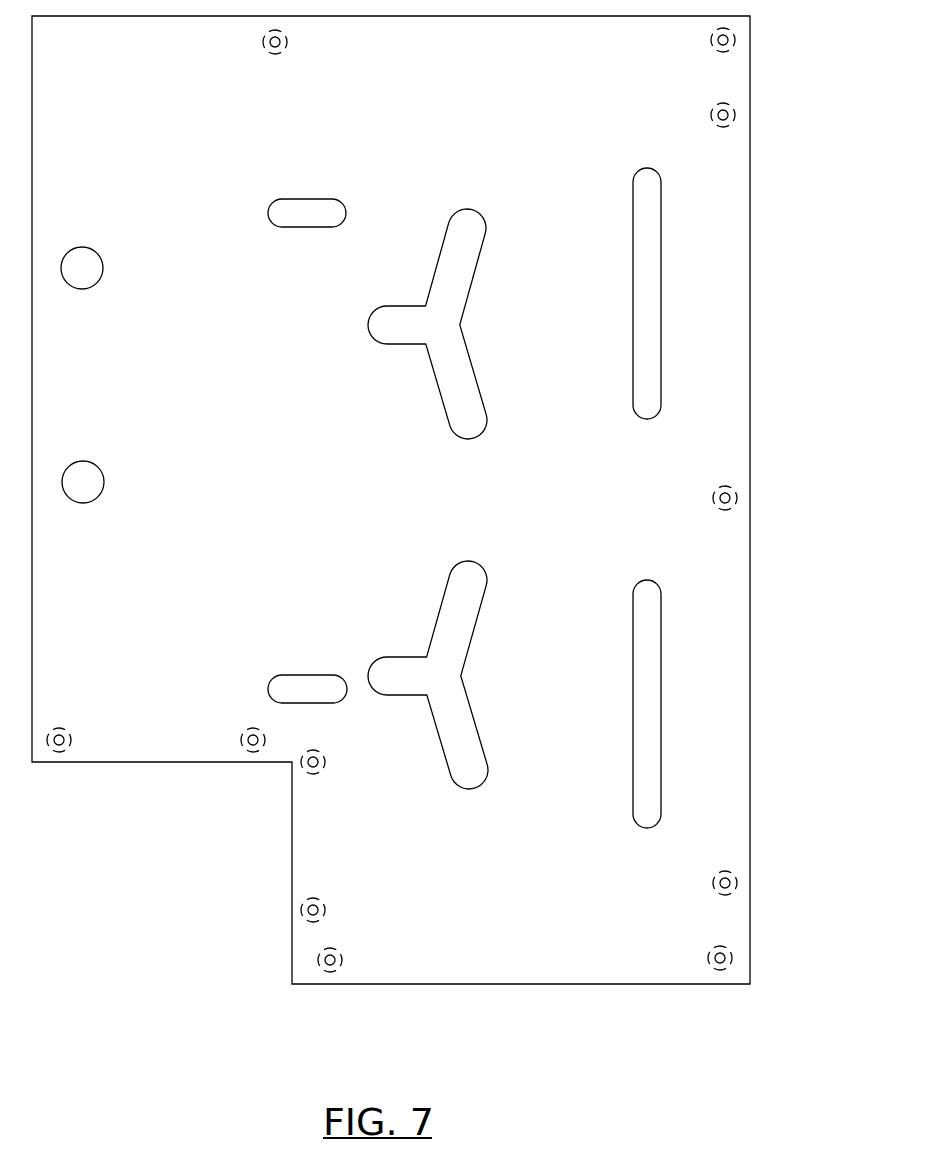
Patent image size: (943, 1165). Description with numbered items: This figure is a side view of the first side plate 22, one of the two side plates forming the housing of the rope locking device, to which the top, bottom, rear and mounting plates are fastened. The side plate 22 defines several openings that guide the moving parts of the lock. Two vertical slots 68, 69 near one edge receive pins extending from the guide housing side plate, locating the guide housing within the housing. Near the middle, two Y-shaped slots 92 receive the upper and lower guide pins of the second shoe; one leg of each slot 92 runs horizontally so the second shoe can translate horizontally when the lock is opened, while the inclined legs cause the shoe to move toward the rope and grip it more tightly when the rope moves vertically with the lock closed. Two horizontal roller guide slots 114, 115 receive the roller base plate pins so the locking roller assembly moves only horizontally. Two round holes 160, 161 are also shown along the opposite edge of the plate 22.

The first side plate 22 is at (750, 323).
The slot 68 is at (643, 829).
The slot 69 is at (632, 177).
The Y-shaped slots 92 is at (462, 440).
The horizontal roller guide slot 114 is at (304, 198).
The horizontal roller guide slot 115 is at (279, 676).
The upper round hole 160 is at (103, 278).
The lower round hole 161 is at (103, 492).